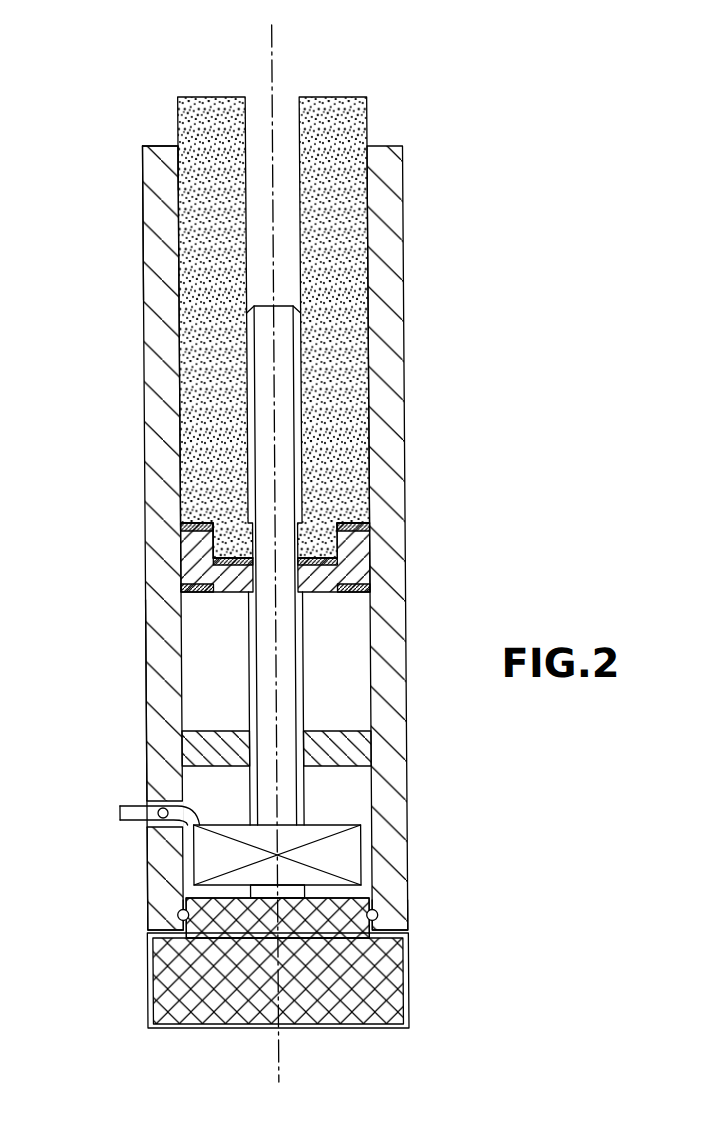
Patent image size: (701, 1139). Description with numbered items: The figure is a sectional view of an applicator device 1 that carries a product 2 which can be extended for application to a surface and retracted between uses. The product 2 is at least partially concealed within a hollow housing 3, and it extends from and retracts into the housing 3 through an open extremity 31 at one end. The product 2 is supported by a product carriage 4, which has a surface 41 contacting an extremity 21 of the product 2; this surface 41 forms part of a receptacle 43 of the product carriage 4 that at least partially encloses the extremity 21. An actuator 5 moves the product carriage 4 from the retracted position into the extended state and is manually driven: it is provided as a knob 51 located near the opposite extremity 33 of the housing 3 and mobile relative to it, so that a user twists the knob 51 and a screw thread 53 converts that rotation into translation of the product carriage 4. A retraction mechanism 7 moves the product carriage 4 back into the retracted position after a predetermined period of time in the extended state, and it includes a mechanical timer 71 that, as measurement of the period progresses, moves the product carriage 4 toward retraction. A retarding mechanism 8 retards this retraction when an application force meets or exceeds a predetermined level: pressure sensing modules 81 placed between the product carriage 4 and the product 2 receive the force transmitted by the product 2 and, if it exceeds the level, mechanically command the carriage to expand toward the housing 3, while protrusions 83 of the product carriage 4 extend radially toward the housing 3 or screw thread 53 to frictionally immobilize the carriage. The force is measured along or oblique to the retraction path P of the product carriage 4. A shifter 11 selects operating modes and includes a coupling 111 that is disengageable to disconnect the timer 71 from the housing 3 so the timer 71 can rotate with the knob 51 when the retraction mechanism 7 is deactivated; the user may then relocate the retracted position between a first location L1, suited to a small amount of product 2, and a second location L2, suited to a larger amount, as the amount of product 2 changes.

The applicator device 1 is at (503, 455).
The product 2 is at (330, 112).
The housing 3 is at (403, 350).
The open extremity 31 is at (176, 160).
The extremity 33 is at (415, 918).
The product carriage 4 is at (357, 550).
The surface 41 is at (367, 531).
The receptacle 43 is at (212, 550).
The actuator 5 is at (136, 1025).
The knob 51 is at (151, 987).
The screw thread 53 is at (303, 703).
The retraction mechanism 7 is at (140, 899).
The timer 71 is at (347, 860).
The retarding mechanism 8 is at (287, 551).
The pressure sensing module 81 is at (233, 556).
The protrusion 83 is at (196, 593).
The shifter 11 is at (116, 807).
The coupling 111 is at (119, 807).
The extremity 21 is at (234, 515).
The retraction path P is at (271, 33).
The first location L1 is at (137, 222).
The second location L2 is at (130, 720).